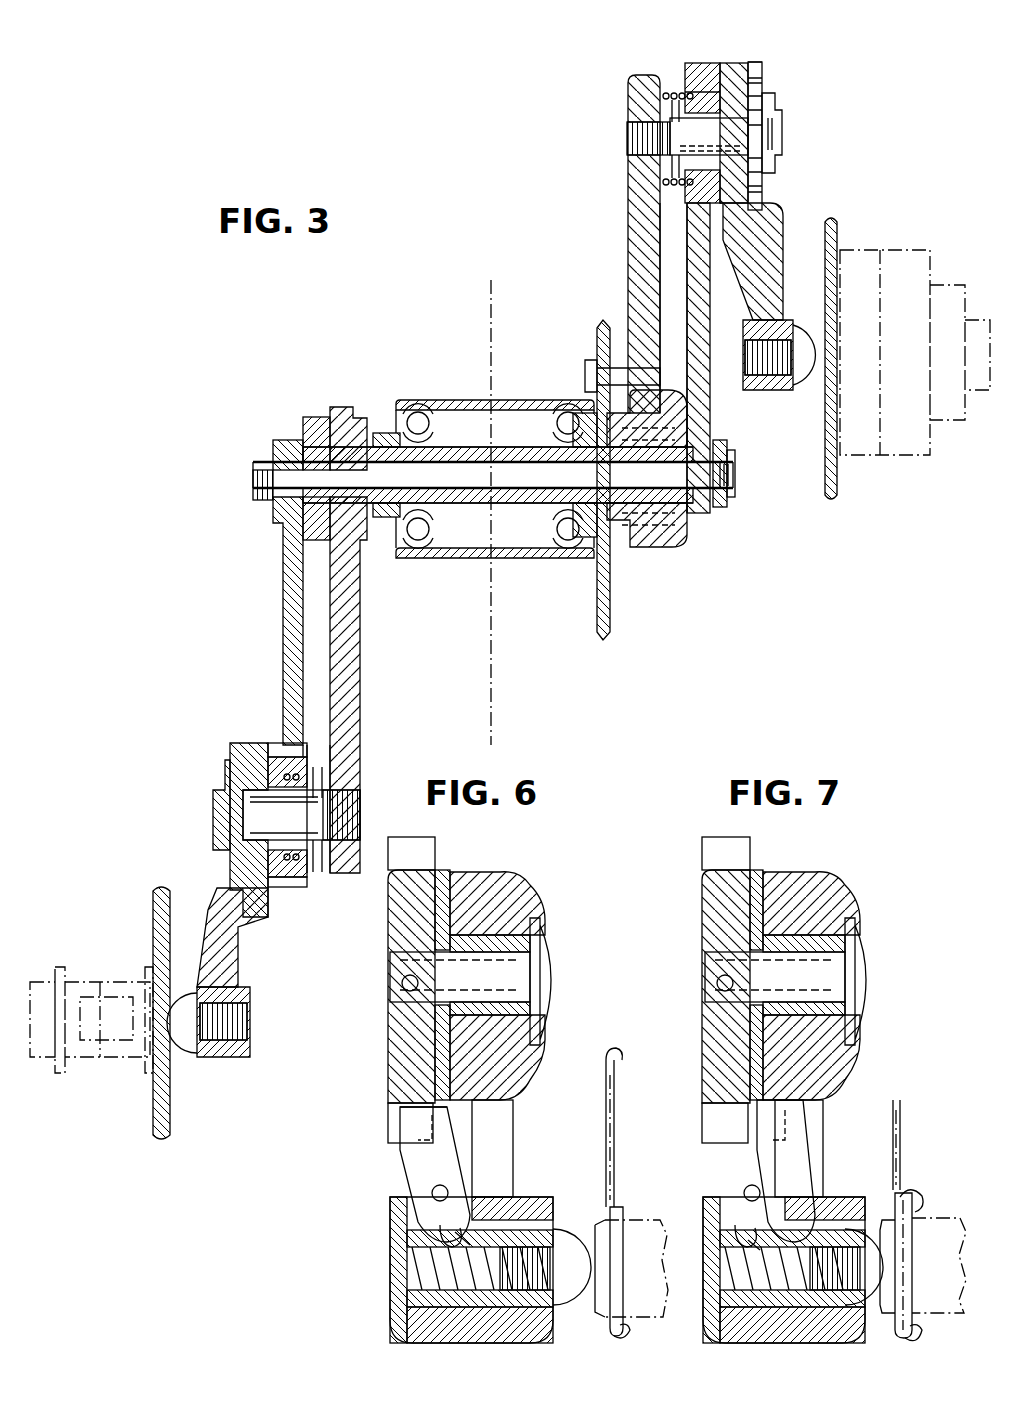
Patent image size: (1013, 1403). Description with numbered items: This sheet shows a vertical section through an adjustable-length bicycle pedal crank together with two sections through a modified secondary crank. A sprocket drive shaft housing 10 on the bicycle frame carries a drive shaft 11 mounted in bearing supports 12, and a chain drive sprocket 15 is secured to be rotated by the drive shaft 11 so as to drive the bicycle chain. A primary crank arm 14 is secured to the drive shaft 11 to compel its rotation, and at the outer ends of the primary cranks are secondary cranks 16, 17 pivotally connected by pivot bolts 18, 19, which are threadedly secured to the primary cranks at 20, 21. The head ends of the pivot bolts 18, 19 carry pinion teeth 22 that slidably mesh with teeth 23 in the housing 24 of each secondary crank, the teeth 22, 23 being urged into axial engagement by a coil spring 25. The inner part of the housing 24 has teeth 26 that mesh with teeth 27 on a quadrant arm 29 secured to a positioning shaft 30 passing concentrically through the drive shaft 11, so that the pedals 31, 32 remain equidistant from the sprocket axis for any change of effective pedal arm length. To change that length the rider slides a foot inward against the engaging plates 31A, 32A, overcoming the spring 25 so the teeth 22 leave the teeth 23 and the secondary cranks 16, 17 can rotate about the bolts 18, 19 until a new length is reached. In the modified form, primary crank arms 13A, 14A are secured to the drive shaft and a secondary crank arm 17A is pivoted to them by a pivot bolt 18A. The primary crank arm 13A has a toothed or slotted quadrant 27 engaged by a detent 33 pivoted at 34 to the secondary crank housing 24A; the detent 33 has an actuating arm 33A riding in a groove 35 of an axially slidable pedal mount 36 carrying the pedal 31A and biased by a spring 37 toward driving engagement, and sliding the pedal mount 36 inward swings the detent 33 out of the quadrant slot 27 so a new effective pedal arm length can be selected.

In FIG. 3, the sprocket drive shaft housing 10 is at (450, 400).
In FIG. 3, the drive shaft 11 is at (518, 505).
In FIG. 3, the bearing supports 12 is at (553, 400).
In FIG. 6, the primary crank arm 13A is at (395, 1062).
In FIG. 3, the primary crank arm 14 is at (348, 706).
In FIG. 7, the primary crank arm 14A is at (708, 1042).
In FIG. 3, the chain drive sprocket 15 is at (612, 626).
In FIG. 3, the secondary crank 16 is at (790, 233).
In FIG. 3, the secondary crank 17 is at (212, 925).
In FIG. 7, the secondary crank arm 17A is at (830, 1062).
In FIG. 3, the pivot bolt 18 is at (757, 135).
In FIG. 6, the pivot bolt 18A is at (512, 970).
In FIG. 7, the pivot bolt 18A is at (826, 970).
In FIG. 3, the pivot bolt 19 is at (318, 805).
In FIG. 3, the threaded securement 20 is at (628, 143).
In FIG. 3, the threaded securement 21 is at (360, 830).
In FIG. 3, the pinion teeth 22 is at (760, 200).
In FIG. 3, the teeth 23 is at (763, 92).
In FIG. 3, the housing 24 is at (752, 62).
In FIG. 7, the secondary crank housing 24A is at (818, 882).
In FIG. 3, the coil spring 25 is at (678, 92).
In FIG. 3, the teeth 26 is at (712, 63).
In FIG. 3, the quadrant teeth 27 is at (690, 218).
In FIG. 6, the quadrant teeth 27 is at (402, 1108).
In FIG. 3, the quadrant arm 29 is at (283, 586).
In FIG. 3, the positioning shaft 30 is at (688, 520).
In FIG. 3, the pedal 31 is at (878, 262).
In FIG. 6, the pedal 31 is at (631, 1268).
In FIG. 3, the engaging plate 31A is at (838, 462).
In FIG. 6, the engaging plate 31A is at (630, 1338).
In FIG. 7, the engaging plate 31A is at (942, 1218).
In FIG. 3, the pedal 32 is at (98, 982).
In FIG. 3, the engaging plate 32A is at (158, 1098).
In FIG. 6, the detent 33 is at (445, 1132).
In FIG. 7, the detent 33 is at (805, 1132).
In FIG. 6, the actuating arm 33A is at (438, 1234).
In FIG. 7, the actuating arm 33A is at (735, 1234).
In FIG. 6, the pivot 34 is at (430, 1193).
In FIG. 7, the pivot 34 is at (762, 1193).
In FIG. 6, the groove 35 is at (465, 1238).
In FIG. 7, the groove 35 is at (748, 1245).
In FIG. 6, the axially slidable pedal mount 36 is at (560, 1232).
In FIG. 7, the axially slidable pedal mount 36 is at (835, 1227).
In FIG. 6, the spring 37 is at (407, 1280).
In FIG. 7, the spring 37 is at (738, 1272).